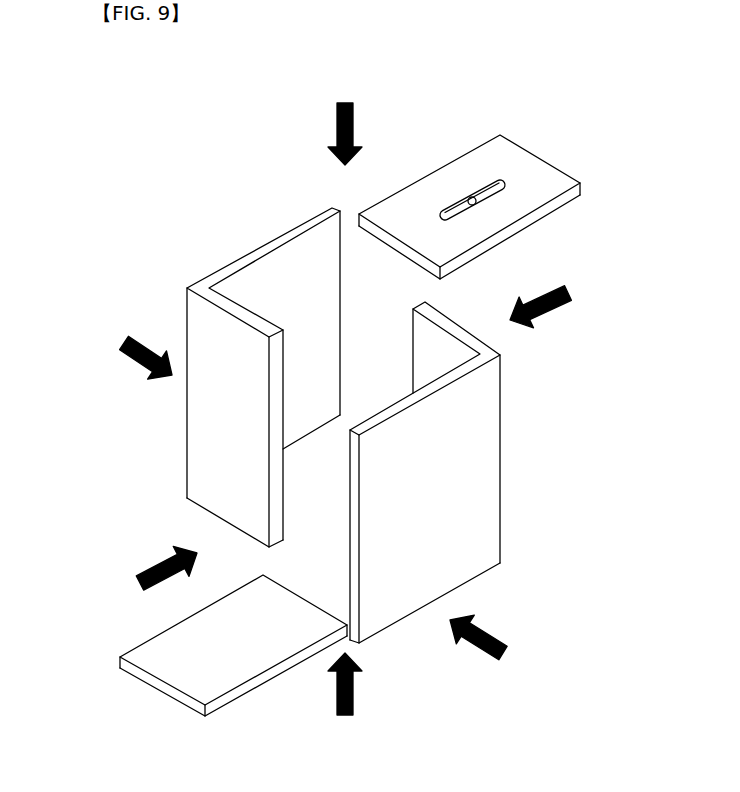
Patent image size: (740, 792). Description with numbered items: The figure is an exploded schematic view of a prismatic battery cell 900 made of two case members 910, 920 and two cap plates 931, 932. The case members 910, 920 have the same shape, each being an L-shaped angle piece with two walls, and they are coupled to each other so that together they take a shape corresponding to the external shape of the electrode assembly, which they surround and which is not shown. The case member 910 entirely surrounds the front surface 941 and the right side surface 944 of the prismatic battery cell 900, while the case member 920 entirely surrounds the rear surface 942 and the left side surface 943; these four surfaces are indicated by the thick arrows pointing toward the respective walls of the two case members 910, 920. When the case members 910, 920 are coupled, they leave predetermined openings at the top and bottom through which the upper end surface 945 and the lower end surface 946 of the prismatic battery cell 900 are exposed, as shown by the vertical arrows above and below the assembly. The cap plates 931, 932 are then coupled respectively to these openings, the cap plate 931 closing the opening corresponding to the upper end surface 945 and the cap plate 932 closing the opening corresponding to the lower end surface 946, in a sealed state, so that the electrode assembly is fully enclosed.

The prismatic battery cell 900 is at (155, 118).
The case member 910 is at (479, 472).
The case member 920 is at (239, 377).
The cap plate 931 is at (528, 175).
The cap plate 932 is at (187, 663).
The front surface 941 is at (497, 644).
The rear surface 942 is at (127, 352).
The left side surface 943 is at (150, 574).
The right side surface 944 is at (557, 300).
The upper end surface 945 is at (345, 122).
The lower end surface 946 is at (345, 699).